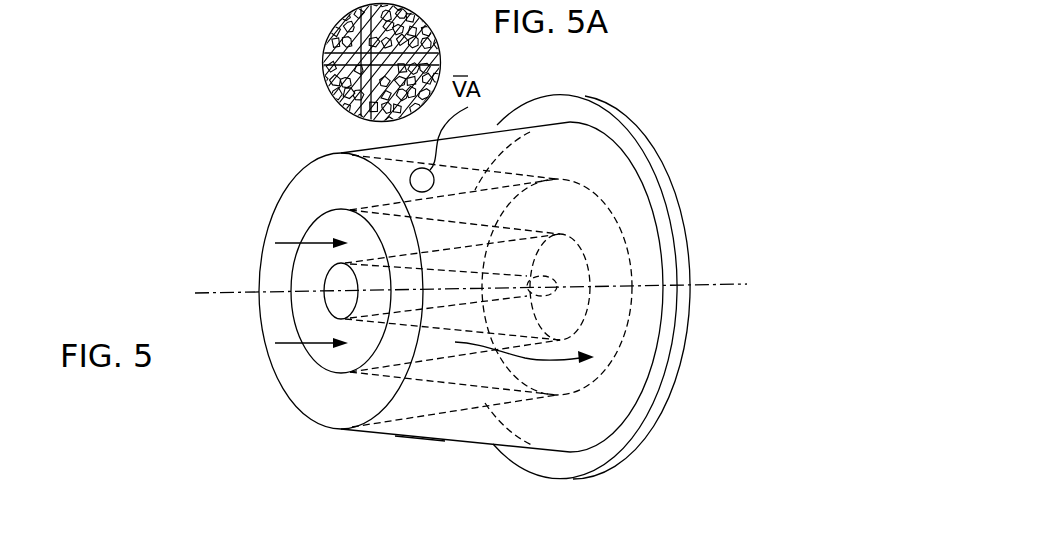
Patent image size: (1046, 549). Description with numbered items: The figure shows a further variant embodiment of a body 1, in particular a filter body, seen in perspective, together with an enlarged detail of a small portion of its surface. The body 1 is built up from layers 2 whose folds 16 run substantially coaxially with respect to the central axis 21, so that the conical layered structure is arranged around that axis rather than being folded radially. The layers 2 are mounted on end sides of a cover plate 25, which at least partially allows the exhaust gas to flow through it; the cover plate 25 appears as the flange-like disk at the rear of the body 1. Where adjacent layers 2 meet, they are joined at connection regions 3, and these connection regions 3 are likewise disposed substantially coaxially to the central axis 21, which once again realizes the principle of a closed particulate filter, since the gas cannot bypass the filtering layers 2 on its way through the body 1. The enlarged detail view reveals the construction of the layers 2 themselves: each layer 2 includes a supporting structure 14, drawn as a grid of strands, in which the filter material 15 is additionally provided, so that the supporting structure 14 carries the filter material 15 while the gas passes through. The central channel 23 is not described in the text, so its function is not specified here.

In FIG. 5, the body 1 is at (803, 316).
In FIG. 5, the layers 2 is at (436, 412).
In FIG. 5, the connection regions 3 is at (289, 277).
In FIG. 5A, the supporting structure 14 is at (323, 76).
In FIG. 5A, the filter material 15 is at (322, 34).
In FIG. 5, the folds 16 is at (485, 405).
In FIG. 5, the central axis 21 is at (720, 284).
In FIG. 5, the central channel 23 is at (292, 343).
In FIG. 5, the cover plate 25 is at (647, 423).